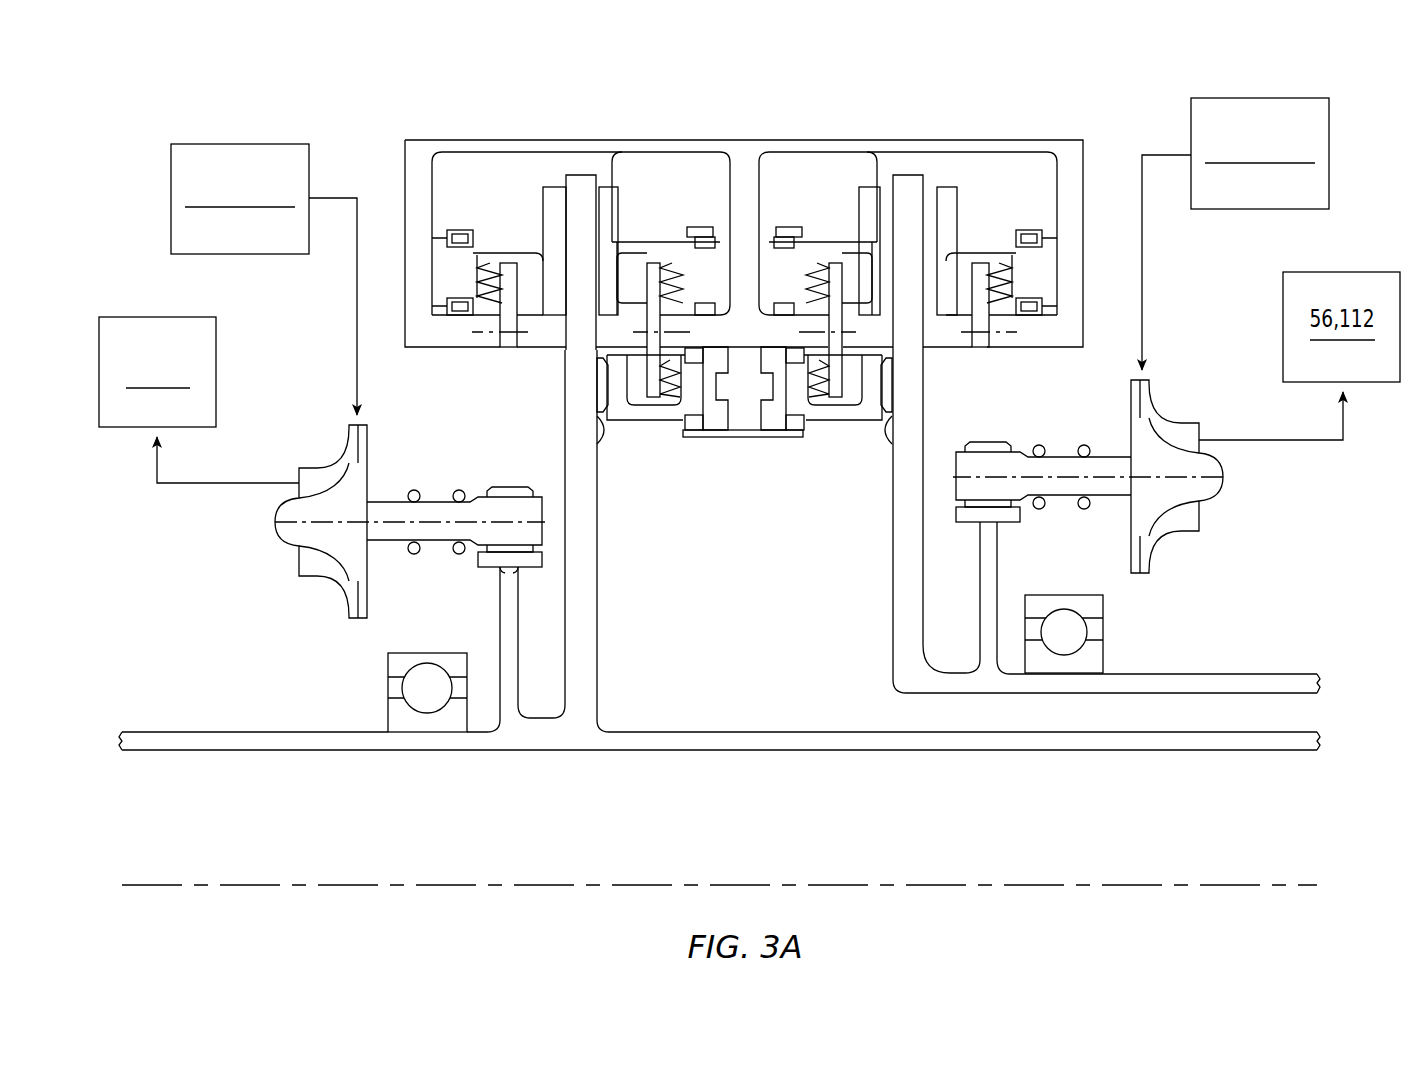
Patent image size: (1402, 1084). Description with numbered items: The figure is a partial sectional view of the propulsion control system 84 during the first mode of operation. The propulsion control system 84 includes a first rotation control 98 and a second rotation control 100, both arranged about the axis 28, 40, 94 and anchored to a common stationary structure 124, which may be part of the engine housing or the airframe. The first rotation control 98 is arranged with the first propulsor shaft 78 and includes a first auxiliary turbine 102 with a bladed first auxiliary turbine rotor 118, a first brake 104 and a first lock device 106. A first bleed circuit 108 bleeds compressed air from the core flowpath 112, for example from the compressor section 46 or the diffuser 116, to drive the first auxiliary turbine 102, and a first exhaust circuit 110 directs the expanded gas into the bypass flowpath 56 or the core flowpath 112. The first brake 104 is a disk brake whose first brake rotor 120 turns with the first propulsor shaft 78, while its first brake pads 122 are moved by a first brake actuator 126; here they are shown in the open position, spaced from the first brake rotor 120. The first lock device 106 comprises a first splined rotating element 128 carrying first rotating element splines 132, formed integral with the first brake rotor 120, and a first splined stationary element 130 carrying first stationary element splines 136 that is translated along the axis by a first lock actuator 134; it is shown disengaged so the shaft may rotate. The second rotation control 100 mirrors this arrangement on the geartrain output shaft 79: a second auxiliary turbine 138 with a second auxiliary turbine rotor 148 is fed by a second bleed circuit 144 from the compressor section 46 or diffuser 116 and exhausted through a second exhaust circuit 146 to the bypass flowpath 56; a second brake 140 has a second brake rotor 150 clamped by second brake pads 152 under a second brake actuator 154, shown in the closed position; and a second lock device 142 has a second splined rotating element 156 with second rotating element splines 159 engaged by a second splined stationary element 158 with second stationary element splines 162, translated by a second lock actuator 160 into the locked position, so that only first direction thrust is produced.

The propulsion control system 84 is at (150, 97).
The second rotation control 100 is at (707, 304).
The stationary structure 124 is at (745, 140).
The second brake 140 is at (512, 178).
The second brake pads 152 is at (553, 187).
The second brake rotor 150 is at (581, 177).
The first brake pads 122 is at (865, 187).
The first brake rotor 120 is at (906, 177).
The first brake 104 is at (997, 168).
The first rotation control 98 is at (1112, 112).
The second brake actuator 154 is at (430, 268).
The first brake actuator 126 is at (1053, 280).
The compressor section 46 is at (240, 199).
The core flowpath 112 is at (1260, 153).
The diffuser 116 is at (240, 199).
The bypass flowpath 56 is at (157, 372).
The first bleed circuit 108 is at (357, 328).
The first exhaust circuit 110 is at (243, 483).
The second bleed circuit 144 is at (1142, 272).
The second exhaust circuit 146 is at (1265, 440).
The first auxiliary turbine 102 is at (393, 578).
The first auxiliary turbine rotor 118 is at (299, 560).
The second splined rotating element 156 is at (520, 501).
The second rotating element splines 159 is at (600, 432).
The second lock device 142 is at (623, 453).
The second splined stationary element 158 is at (682, 478).
The second stationary element splines 162 is at (622, 422).
The second lock actuator 160 is at (733, 398).
The first lock actuator 134 is at (757, 406).
The first lock device 106 is at (884, 444).
The first splined stationary element 130 is at (867, 427).
The first stationary element splines 136 is at (872, 373).
The first splined rotating element 128 is at (900, 393).
The first rotating element splines 132 is at (880, 420).
The second auxiliary turbine 138 is at (1134, 526).
The second auxiliary turbine rotor 148 is at (1215, 505).
The first propulsor shaft 78 is at (1318, 668).
The geartrain output shaft 79 is at (1318, 728).
The axis 28 is at (719, 857).
The axis 40 is at (719, 857).
The axis 94 is at (1317, 885).